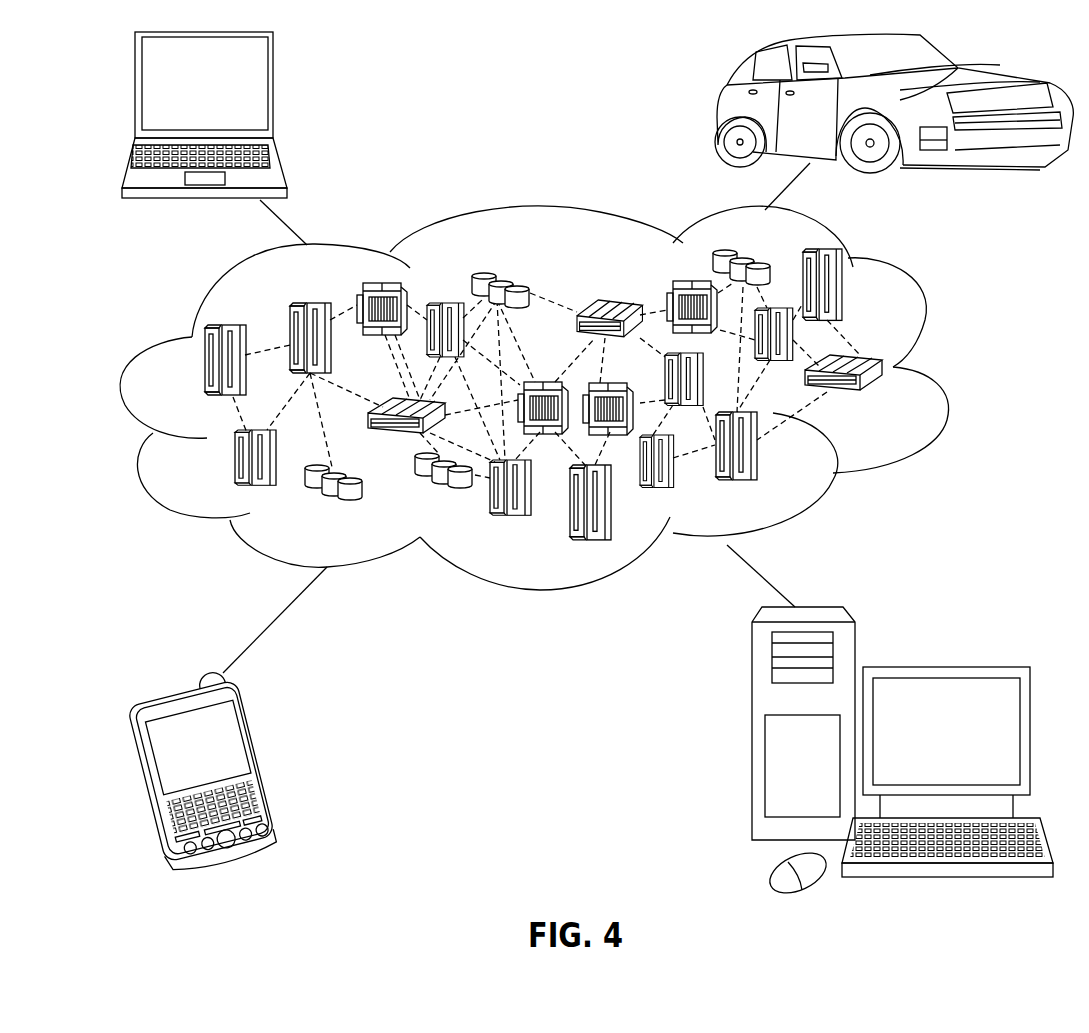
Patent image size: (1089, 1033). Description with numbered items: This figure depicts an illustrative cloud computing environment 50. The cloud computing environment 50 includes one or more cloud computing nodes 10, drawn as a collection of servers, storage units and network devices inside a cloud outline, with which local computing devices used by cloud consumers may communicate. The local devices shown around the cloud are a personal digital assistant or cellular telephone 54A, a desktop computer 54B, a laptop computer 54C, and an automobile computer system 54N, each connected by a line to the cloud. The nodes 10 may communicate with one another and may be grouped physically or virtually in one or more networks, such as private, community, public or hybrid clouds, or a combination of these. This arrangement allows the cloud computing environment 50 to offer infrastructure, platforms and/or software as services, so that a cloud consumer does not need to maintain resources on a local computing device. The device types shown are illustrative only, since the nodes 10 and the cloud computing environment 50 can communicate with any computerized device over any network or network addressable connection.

The cloud computing environment 50 is at (947, 367).
The cloud computing node 10 is at (888, 400).
The personal digital assistant or cellular telephone 54A is at (262, 760).
The desktop computer 54B is at (943, 667).
The laptop computer 54C is at (275, 92).
The automobile computer system 54N is at (718, 108).